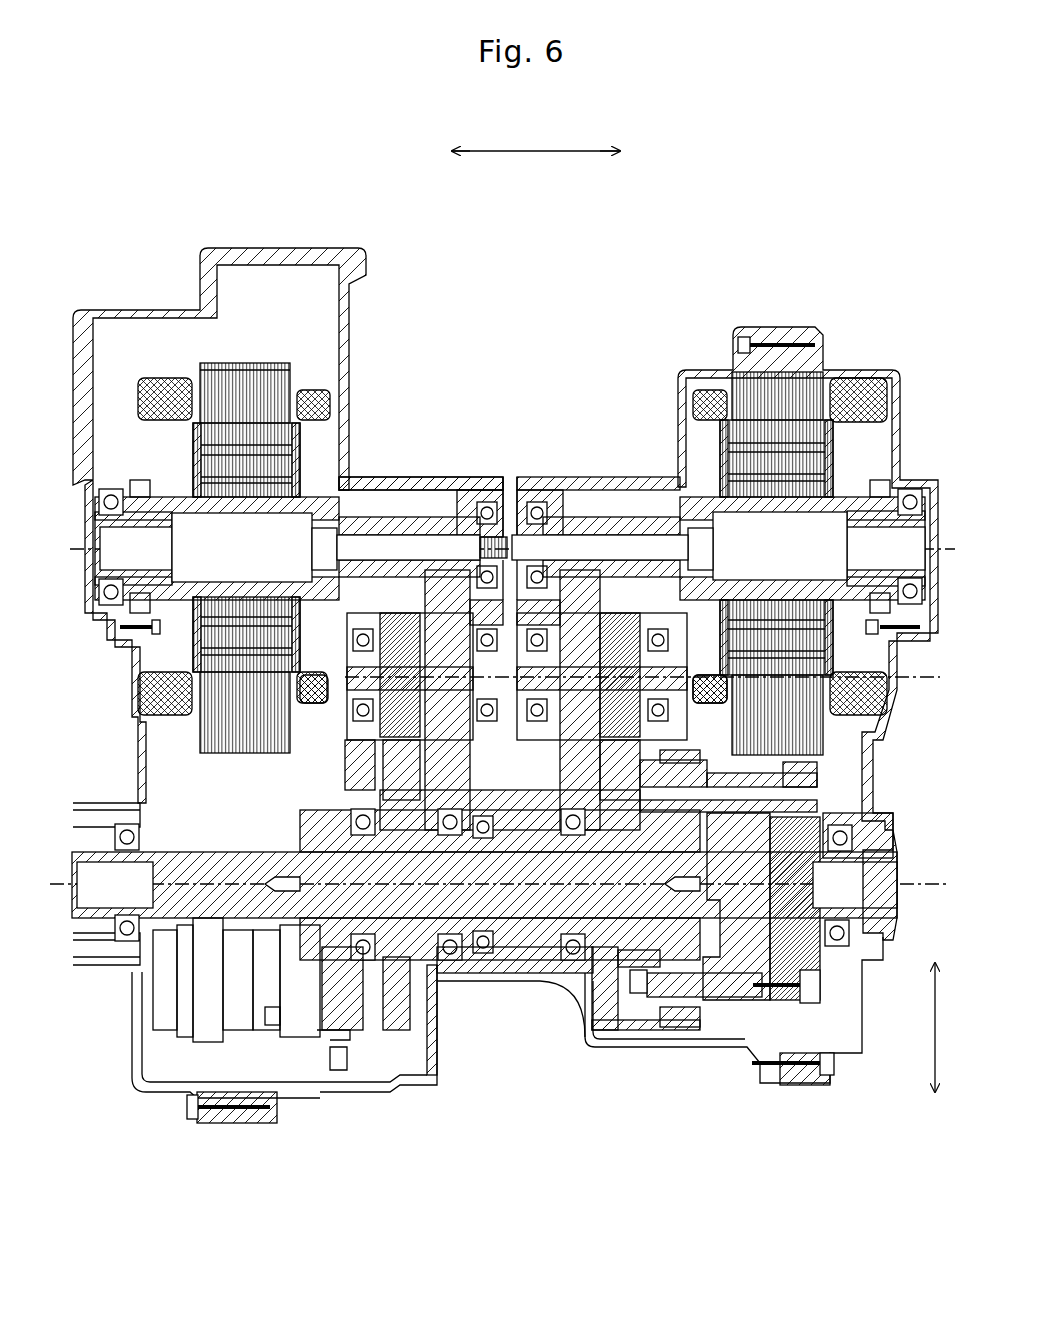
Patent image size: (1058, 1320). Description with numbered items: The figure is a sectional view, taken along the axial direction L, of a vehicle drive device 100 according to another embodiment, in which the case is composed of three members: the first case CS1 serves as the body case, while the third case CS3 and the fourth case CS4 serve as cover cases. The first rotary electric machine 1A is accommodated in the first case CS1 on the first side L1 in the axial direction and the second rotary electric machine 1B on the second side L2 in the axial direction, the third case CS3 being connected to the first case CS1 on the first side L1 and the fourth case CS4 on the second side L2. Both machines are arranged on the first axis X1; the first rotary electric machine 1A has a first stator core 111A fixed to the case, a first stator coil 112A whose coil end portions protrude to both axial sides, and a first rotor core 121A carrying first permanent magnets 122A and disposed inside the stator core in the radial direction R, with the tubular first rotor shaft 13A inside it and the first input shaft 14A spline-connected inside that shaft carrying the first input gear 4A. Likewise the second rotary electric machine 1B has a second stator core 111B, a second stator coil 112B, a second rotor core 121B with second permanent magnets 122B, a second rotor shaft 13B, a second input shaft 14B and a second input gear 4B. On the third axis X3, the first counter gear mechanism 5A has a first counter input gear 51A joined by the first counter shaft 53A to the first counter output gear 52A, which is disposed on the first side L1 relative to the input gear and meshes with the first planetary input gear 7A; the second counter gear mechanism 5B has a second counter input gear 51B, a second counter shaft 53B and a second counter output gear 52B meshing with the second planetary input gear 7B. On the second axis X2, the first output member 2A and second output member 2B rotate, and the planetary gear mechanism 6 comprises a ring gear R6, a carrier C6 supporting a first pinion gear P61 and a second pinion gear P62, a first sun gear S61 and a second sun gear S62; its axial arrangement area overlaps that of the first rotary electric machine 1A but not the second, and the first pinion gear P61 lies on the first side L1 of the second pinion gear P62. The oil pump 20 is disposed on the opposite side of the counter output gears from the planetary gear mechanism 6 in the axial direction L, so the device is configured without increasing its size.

The vehicle drive device 100 is at (195, 200).
The fourth case CS4 is at (84, 292).
The first case CS1 is at (308, 248).
The third case CS3 is at (830, 330).
The second rotary electric machine 1B is at (266, 542).
The first rotary electric machine 1A is at (735, 499).
The second stator core 111B is at (232, 378).
The second stator coil 112B is at (166, 715).
The second rotor core 121B is at (193, 640).
The second permanent magnets 122B is at (305, 447).
The first stator core 111A is at (741, 330).
The first stator coil 112A is at (880, 407).
The first rotor core 121A is at (753, 423).
The first permanent magnets 122A is at (717, 447).
The second rotor shaft 13B is at (193, 493).
The first rotor shaft 13A is at (856, 500).
The second input shaft 14B is at (390, 493).
The first input shaft 14A is at (640, 490).
The second counter gear mechanism 5B is at (405, 597).
The first counter gear mechanism 5A is at (612, 598).
The second input gear 4B is at (483, 515).
The first input gear 4A is at (535, 520).
The second counter output gear 52B is at (404, 613).
The first counter output gear 52A is at (613, 617).
The second counter input gear 51B is at (358, 760).
The first counter input gear 51A is at (666, 735).
The second counter shaft 53B is at (340, 702).
The first counter shaft 53A is at (802, 655).
The second pinion gear P62 is at (702, 760).
The first pinion gear P61 is at (781, 765).
The carrier C6 is at (822, 972).
The planetary gear mechanism 6 is at (820, 1017).
The second output member 2B is at (90, 923).
The first output member 2A is at (897, 922).
The oil pump 20 is at (308, 1040).
The second planetary input gear 7B is at (420, 1076).
The first planetary input gear 7A is at (623, 1040).
The ring gear R6 is at (673, 1010).
The second sun gear S62 is at (703, 955).
The first sun gear S61 is at (740, 955).
The first axis X1 is at (950, 549).
The second axis X2 is at (896, 884).
The third axis X3 is at (902, 677).
The axial direction L is at (536, 135).
The first side in the axial direction L1 is at (627, 152).
The second side in the axial direction L2 is at (443, 152).
The radial direction R is at (946, 1027).